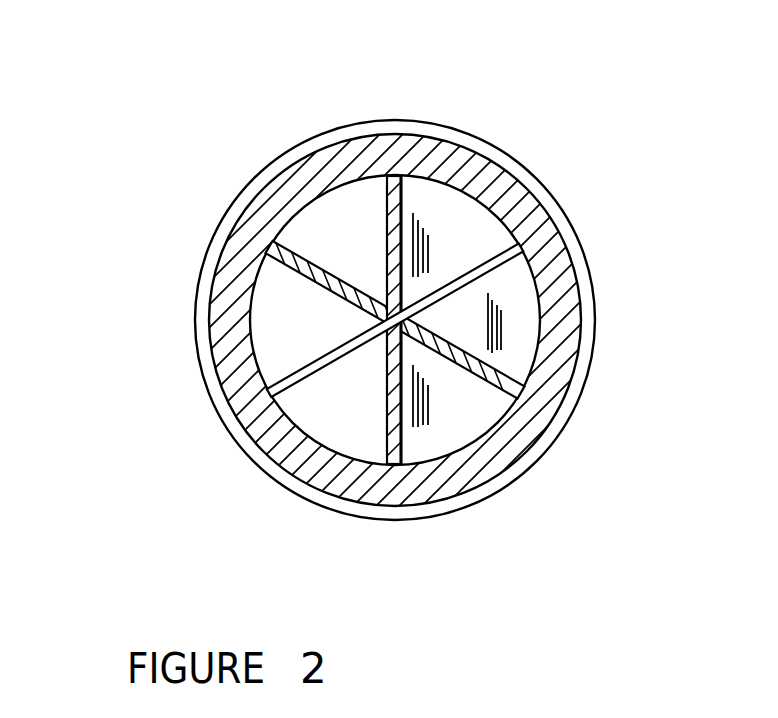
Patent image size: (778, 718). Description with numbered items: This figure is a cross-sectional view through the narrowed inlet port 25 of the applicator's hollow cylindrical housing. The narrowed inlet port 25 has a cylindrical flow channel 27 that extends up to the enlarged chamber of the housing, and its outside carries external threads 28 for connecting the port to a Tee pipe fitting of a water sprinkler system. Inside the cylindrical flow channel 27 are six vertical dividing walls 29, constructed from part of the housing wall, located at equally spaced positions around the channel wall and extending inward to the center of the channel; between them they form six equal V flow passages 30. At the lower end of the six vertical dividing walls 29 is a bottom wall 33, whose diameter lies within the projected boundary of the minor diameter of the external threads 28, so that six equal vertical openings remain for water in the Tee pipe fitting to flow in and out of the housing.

The narrowed inlet port 25 is at (332, 490).
The cylindrical flow channel 27 is at (212, 318).
The external threads 28 is at (418, 125).
The vertical dividing walls 29 is at (391, 200).
The V flow passages 30 is at (353, 240).
The bottom wall 33 is at (422, 433).